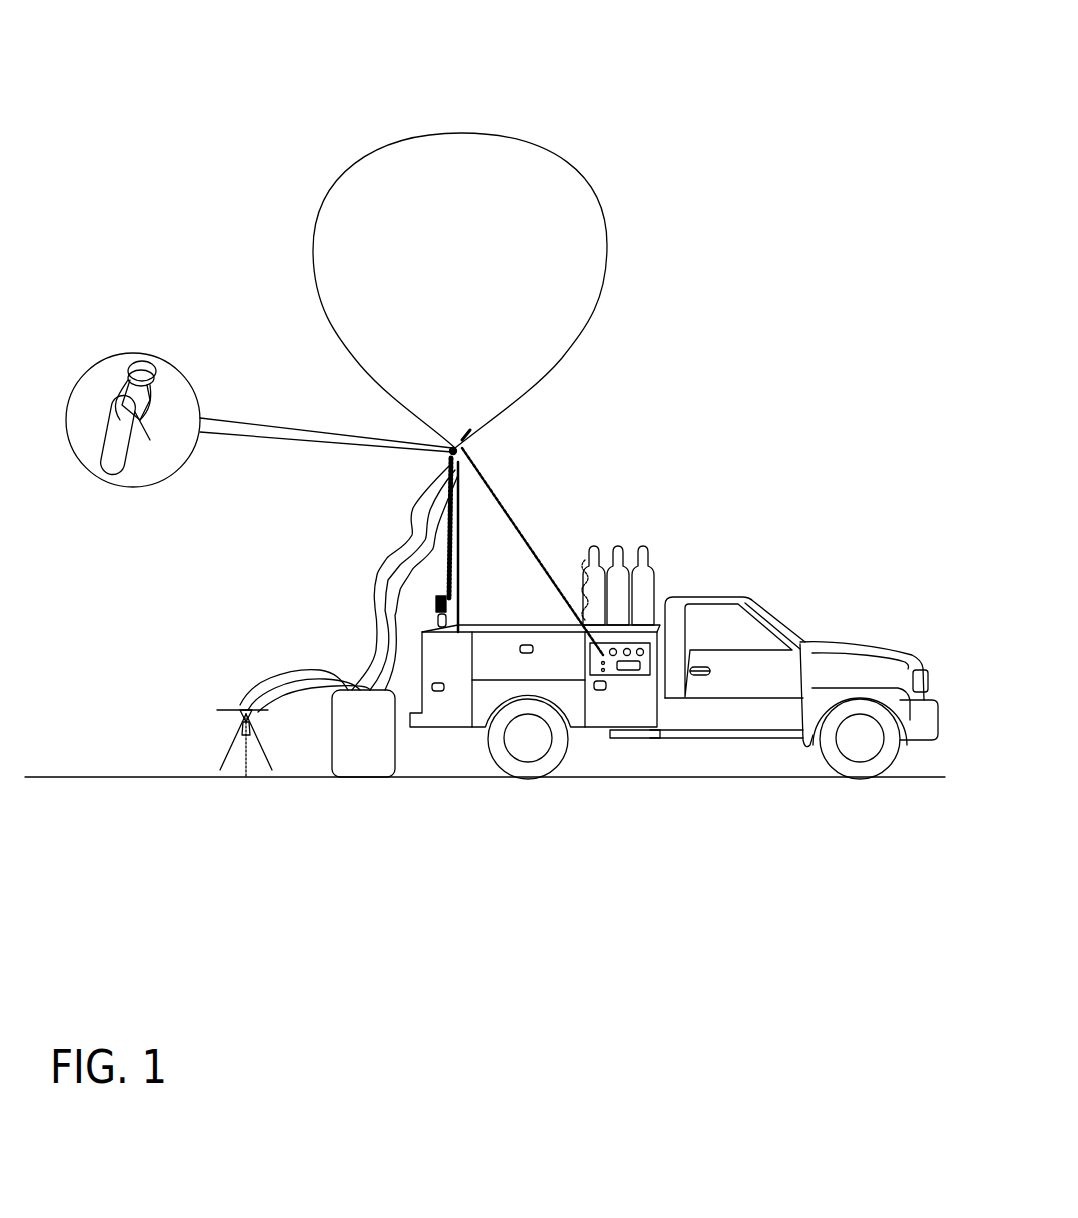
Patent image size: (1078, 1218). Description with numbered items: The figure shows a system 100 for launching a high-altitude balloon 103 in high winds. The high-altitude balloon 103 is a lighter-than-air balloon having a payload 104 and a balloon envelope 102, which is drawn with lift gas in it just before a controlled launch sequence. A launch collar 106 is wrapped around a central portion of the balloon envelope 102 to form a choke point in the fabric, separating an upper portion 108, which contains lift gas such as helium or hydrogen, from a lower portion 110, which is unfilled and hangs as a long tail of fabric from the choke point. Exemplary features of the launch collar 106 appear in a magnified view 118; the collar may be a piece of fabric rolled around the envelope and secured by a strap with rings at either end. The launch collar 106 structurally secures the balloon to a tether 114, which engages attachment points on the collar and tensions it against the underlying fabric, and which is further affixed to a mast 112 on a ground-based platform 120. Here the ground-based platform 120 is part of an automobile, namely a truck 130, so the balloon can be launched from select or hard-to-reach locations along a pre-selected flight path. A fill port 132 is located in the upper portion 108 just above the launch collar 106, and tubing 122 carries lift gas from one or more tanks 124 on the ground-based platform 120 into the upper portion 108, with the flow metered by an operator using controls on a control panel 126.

The system 100 is at (747, 98).
The balloon envelope 102 is at (395, 432).
The high-altitude balloon 103 is at (618, 358).
The payload 104 is at (225, 754).
The launch collar 106 is at (147, 392).
The upper portion 108 is at (488, 283).
The lower portion 110 is at (320, 668).
The mast 112 is at (460, 541).
The tether 114 is at (150, 447).
The magnified view 118 is at (201, 410).
The ground-based platform 120 is at (517, 636).
The tubing 122 is at (533, 558).
The tank 124 is at (644, 578).
The control panel 126 is at (625, 672).
The truck 130 is at (788, 592).
The fill port 132 is at (465, 434).